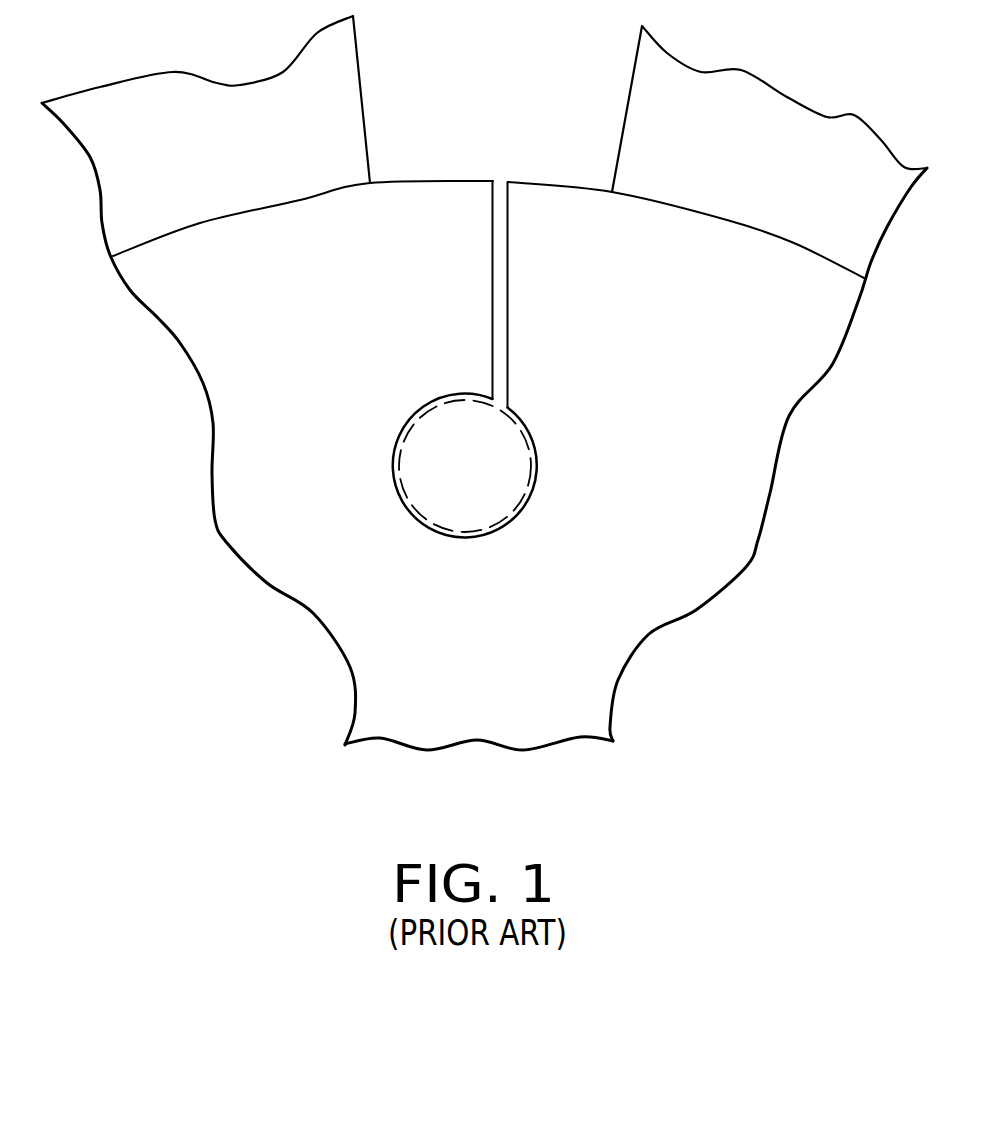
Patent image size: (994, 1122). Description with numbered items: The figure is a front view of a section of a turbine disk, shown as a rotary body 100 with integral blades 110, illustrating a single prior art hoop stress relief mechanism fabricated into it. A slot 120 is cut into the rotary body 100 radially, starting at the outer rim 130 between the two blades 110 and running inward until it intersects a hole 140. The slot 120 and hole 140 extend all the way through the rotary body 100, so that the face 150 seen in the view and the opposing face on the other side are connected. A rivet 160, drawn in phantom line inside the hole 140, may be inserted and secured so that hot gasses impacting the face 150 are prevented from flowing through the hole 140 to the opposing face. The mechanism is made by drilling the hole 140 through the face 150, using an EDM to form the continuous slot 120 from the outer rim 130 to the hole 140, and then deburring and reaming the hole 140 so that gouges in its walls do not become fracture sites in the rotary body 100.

The rotary body 100 is at (746, 567).
The integral blades 110 is at (163, 115).
The slot 120 is at (494, 289).
The outer rim 130 is at (393, 181).
The hole 140 is at (467, 540).
The face 150 is at (670, 350).
The rivet 160 is at (417, 413).